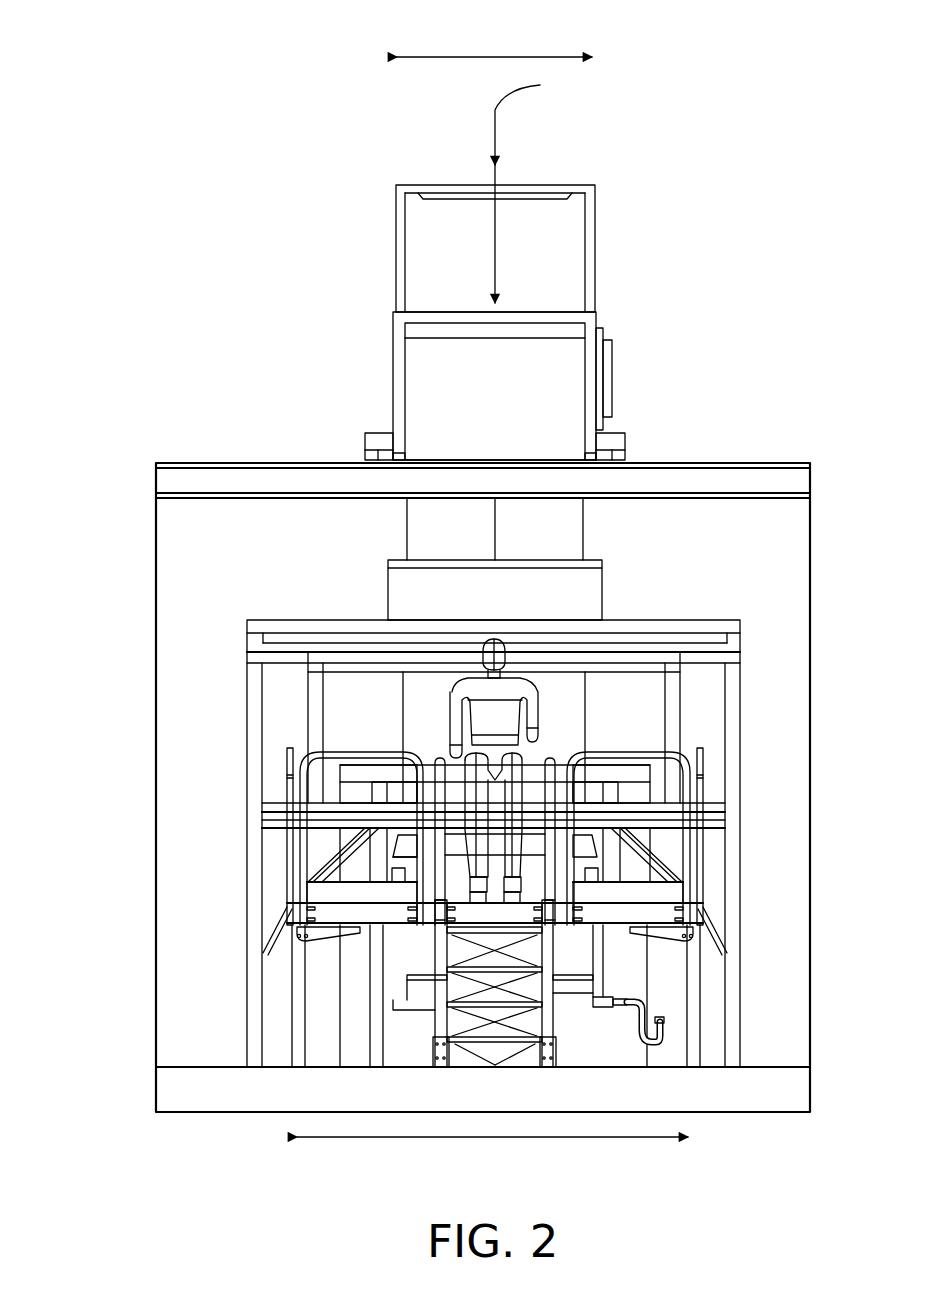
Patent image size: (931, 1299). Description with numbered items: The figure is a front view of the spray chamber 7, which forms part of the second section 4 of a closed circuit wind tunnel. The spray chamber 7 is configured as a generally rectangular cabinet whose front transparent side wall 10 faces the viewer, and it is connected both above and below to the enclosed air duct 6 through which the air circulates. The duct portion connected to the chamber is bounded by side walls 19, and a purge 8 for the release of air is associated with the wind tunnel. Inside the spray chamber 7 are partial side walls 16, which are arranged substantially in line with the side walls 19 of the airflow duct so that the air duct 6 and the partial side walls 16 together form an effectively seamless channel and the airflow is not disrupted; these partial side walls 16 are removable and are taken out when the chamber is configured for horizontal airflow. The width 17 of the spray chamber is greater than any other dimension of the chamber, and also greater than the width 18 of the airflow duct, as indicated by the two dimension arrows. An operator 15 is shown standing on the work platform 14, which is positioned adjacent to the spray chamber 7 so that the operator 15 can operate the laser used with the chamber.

The second section 4 is at (118, 720).
The enclosed duct 6 is at (497, 137).
The spray chamber 7 is at (742, 630).
The purge 8 is at (598, 257).
The front transparent side wall 10 is at (652, 680).
The work platform 14 is at (703, 880).
The operator 15 is at (538, 727).
The partial side walls 16 is at (403, 707).
The width of the spray chamber 17 is at (488, 1140).
The width of the airflow duct 18 is at (497, 57).
The side walls of the airflow duct 19 is at (393, 375).